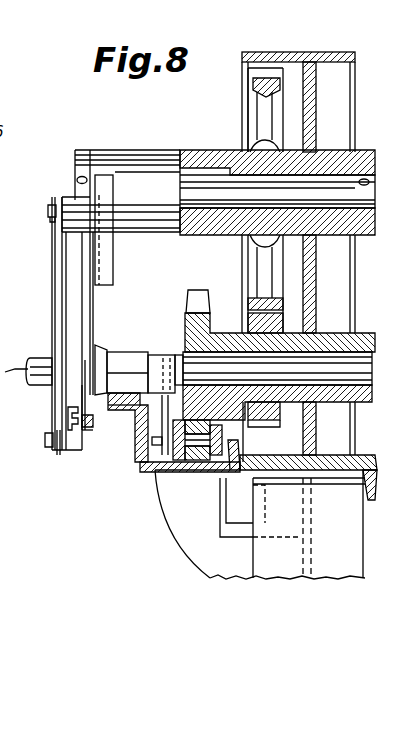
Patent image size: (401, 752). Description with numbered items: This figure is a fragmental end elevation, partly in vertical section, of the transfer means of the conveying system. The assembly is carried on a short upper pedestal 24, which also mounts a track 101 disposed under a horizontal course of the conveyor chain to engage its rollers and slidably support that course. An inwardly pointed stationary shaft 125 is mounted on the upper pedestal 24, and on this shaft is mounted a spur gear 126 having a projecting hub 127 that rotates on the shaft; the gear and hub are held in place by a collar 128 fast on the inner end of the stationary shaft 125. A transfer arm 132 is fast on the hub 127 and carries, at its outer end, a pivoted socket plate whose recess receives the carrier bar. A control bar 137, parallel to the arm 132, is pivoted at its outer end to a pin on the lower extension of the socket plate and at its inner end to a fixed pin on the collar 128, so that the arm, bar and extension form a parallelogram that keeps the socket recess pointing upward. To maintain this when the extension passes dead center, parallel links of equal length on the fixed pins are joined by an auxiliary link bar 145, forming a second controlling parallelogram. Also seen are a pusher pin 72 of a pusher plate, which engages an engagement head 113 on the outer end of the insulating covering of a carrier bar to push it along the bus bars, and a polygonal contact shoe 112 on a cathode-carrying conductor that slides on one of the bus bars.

The upper pedestal 24 is at (267, 64).
The spur gear 126 is at (248, 82).
The projecting hub 127 is at (162, 155).
The collar 128 is at (82, 153).
The stationary shaft 125 is at (352, 205).
The transfer arm 132 is at (100, 303).
The auxiliary link bar 145 is at (50, 283).
The control bar 137 is at (58, 305).
The contact shoe 112 is at (127, 353).
The pusher pin 72 is at (163, 352).
The engagement head 113 is at (172, 352).
The track 101 is at (0, 464).